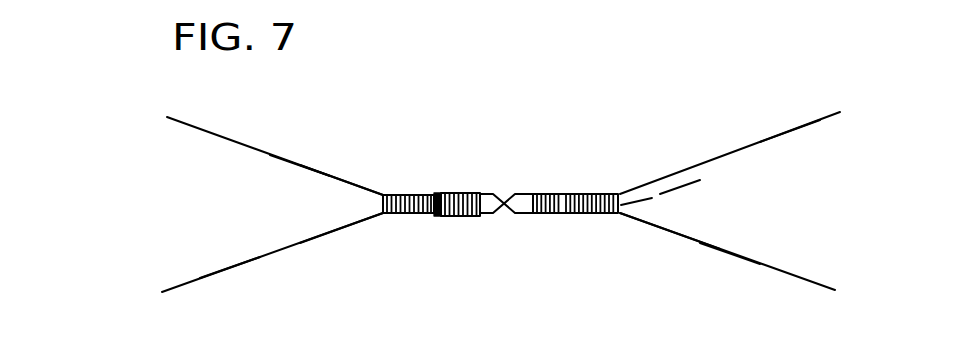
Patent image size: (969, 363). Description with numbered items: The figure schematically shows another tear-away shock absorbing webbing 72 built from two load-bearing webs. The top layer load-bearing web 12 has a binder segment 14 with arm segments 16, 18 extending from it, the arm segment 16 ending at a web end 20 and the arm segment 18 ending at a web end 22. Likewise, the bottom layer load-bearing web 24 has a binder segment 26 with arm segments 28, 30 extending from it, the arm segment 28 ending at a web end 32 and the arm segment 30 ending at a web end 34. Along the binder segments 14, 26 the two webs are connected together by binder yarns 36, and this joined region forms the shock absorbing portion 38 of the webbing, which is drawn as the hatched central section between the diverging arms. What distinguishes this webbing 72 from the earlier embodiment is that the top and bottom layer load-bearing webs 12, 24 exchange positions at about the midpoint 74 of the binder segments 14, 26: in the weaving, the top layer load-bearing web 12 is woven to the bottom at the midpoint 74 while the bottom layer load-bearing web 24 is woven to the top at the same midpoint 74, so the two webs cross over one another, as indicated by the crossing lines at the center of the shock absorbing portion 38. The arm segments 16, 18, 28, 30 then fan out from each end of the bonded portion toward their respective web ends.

The top layer load-bearing web 12 is at (334, 142).
The binder segment 14 is at (405, 192).
The arm segment 16 is at (287, 157).
The arm segment 18 is at (785, 135).
The web end 20 is at (250, 154).
The web end 22 is at (768, 139).
The bottom layer load-bearing web 24 is at (696, 112).
The binder segment 26 is at (425, 217).
The arm segment 28 is at (222, 272).
The arm segment 30 is at (742, 258).
The web end 32 is at (254, 269).
The web end 34 is at (761, 265).
The binder yarns 36 is at (662, 203).
The shock absorbing portion 38 is at (593, 137).
The tear-away shock absorbing webbing 72 is at (122, 81).
The midpoint 74 is at (518, 172).